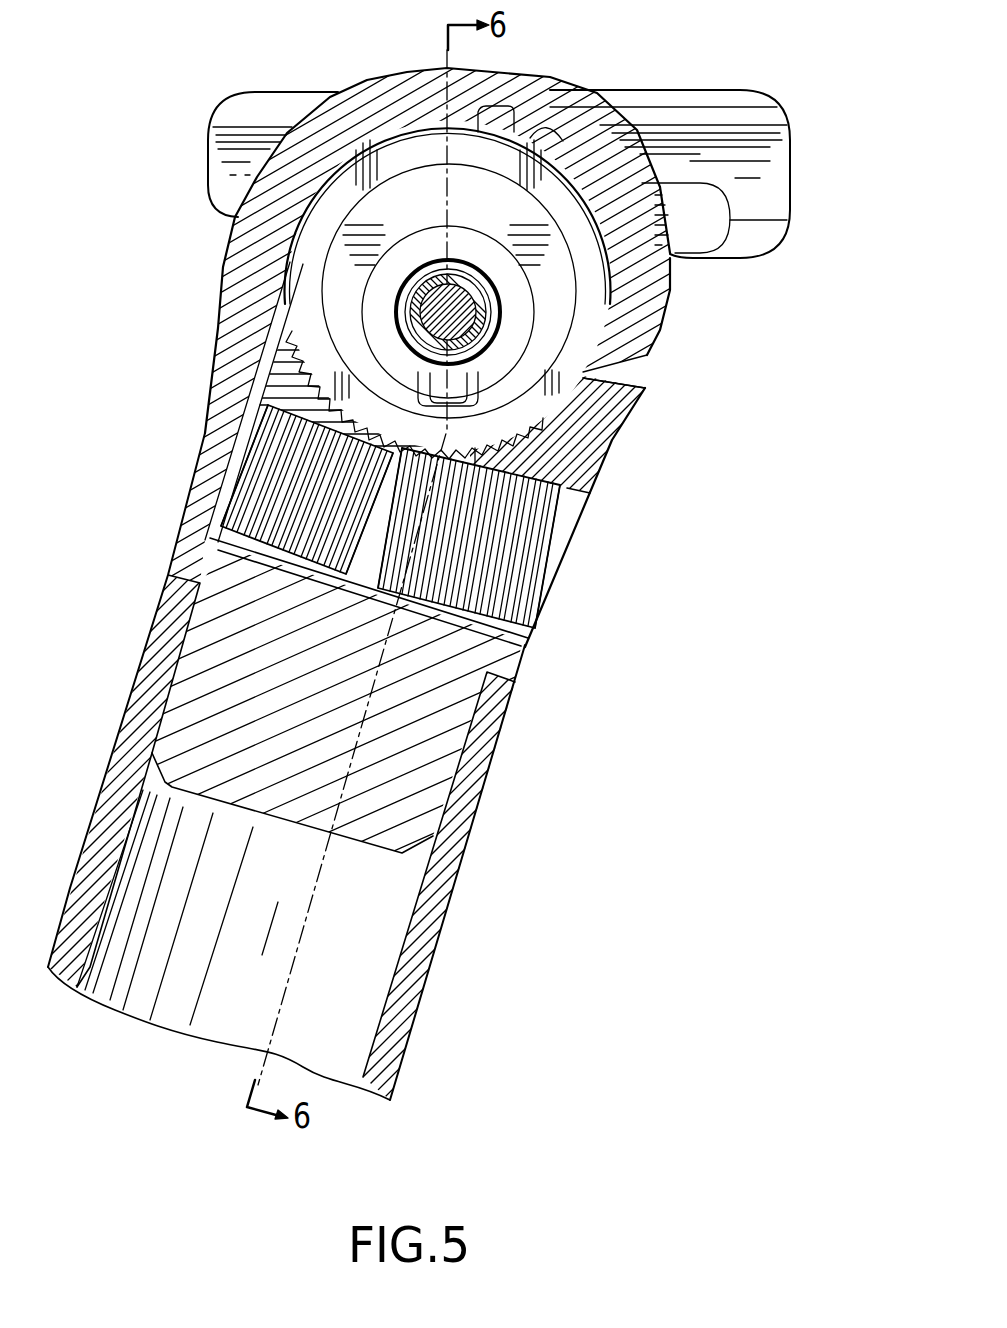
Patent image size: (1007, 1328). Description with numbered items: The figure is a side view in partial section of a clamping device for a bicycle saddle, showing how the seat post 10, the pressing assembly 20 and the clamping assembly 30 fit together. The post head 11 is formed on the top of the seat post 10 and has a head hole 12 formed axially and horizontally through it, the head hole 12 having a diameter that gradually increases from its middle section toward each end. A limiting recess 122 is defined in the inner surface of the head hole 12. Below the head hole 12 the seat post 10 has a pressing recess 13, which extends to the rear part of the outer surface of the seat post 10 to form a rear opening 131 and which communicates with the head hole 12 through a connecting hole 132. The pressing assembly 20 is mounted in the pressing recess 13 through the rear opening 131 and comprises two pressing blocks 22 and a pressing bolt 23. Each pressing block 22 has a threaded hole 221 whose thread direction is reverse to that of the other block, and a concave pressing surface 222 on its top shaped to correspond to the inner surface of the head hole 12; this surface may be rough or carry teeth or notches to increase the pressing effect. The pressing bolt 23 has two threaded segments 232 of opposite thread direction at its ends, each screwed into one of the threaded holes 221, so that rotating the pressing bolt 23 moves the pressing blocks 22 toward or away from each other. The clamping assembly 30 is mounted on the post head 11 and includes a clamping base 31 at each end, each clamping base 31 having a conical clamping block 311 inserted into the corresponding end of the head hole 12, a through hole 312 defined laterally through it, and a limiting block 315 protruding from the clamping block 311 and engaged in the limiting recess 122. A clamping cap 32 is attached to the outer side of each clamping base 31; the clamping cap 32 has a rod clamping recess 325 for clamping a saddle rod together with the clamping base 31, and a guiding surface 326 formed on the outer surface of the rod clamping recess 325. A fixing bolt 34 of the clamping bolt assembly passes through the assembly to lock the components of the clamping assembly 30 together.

The seat post 10 is at (518, 764).
The post head 11 is at (349, 110).
The head hole 12 is at (580, 325).
The limiting recess 122 is at (540, 135).
The pressing recess 13 is at (370, 570).
The rear opening 131 is at (522, 638).
The connecting hole 132 is at (294, 305).
The pressing assembly 20 is at (622, 462).
The pressing block 22 is at (616, 410).
The threaded hole 221 is at (242, 509).
The concave pressing surface 222 is at (326, 366).
The pressing bolt 23 is at (517, 579).
The threaded segment 232 is at (512, 538).
The clamping assembly 30 is at (276, 68).
The clamping base 31 is at (580, 330).
The clamping block 311 is at (306, 268).
The through hole 312 is at (408, 176).
The limiting block 315 is at (500, 125).
The clamping cap 32 is at (748, 262).
The rod clamping recess 325 is at (727, 145).
The guiding surface 326 is at (650, 95).
The fixing bolt 34 is at (440, 295).